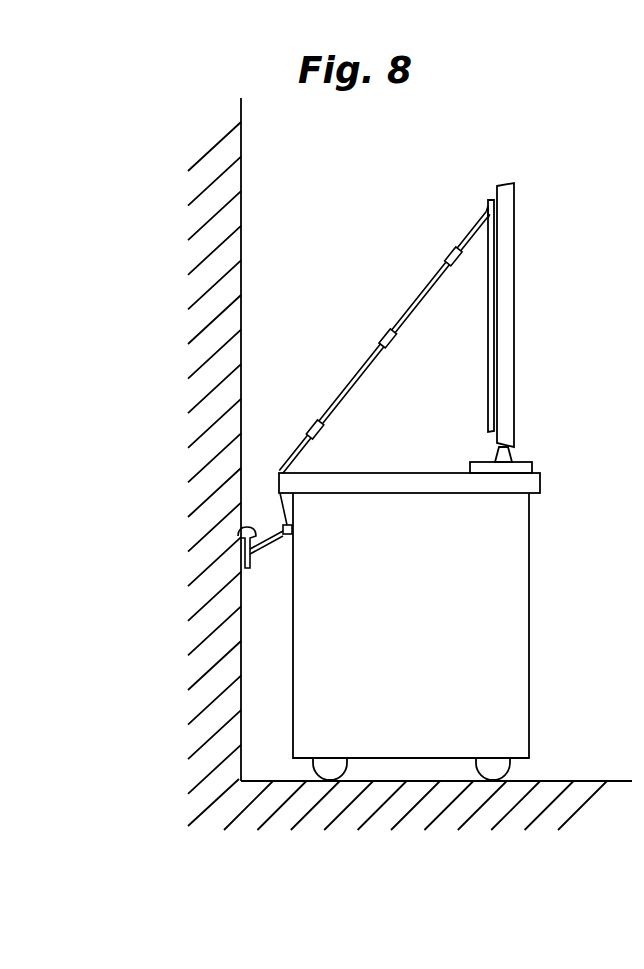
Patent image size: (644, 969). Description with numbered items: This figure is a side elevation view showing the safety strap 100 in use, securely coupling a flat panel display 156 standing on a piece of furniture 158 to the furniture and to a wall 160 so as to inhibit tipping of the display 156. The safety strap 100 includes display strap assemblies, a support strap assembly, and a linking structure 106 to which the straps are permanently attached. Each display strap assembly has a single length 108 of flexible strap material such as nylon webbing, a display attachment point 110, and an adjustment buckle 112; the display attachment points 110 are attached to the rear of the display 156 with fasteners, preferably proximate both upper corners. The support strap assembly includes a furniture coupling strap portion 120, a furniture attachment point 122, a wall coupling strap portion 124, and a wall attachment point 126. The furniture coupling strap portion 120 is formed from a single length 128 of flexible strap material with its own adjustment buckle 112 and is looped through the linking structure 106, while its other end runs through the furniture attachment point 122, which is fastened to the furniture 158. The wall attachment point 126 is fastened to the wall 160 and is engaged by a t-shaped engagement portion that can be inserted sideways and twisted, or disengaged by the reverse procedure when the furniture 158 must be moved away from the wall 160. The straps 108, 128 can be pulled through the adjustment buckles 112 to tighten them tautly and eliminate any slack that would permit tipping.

The safety strap 100 is at (449, 258).
The linking structure 106 is at (386, 332).
The single length of flexible strap material 108 is at (467, 230).
The display attachment point 110 is at (487, 204).
The adjustment buckle 112 is at (422, 290).
The furniture coupling strap portion 120 is at (306, 444).
The furniture attachment point 122 is at (283, 530).
The wall coupling strap portion 124 is at (268, 558).
The wall attachment point 126 is at (240, 529).
The single length of flexible strap material 128 is at (363, 362).
The flat panel display 156 is at (514, 303).
The furniture 158 is at (530, 610).
The wall 160 is at (241, 243).